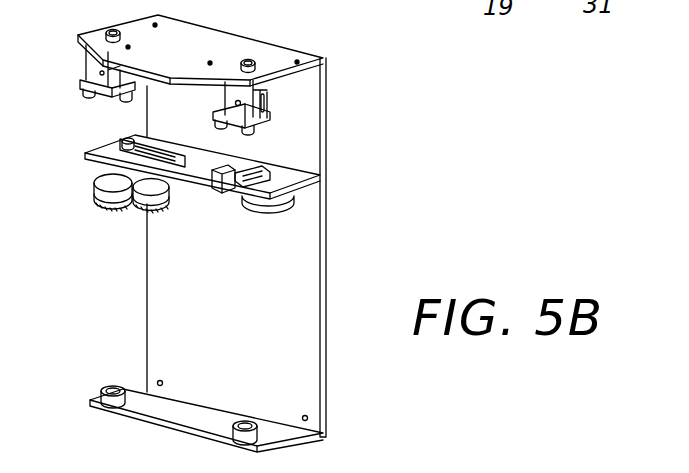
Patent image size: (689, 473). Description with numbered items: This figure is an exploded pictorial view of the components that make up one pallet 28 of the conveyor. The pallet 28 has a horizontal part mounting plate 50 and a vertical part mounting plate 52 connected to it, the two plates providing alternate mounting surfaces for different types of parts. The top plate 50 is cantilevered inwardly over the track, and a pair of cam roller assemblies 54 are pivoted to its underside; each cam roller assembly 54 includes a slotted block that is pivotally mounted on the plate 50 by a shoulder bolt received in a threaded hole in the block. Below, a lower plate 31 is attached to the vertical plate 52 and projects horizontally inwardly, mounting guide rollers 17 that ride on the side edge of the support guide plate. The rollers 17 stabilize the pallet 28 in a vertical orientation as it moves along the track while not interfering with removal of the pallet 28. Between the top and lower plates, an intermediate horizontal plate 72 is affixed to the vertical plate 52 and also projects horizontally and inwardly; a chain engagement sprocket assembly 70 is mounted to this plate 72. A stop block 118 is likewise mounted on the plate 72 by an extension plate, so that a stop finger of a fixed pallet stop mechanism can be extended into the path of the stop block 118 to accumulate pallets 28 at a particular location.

The guide rollers 17 is at (113, 389).
The pallet 28 is at (340, 225).
The lower plate 31 is at (205, 408).
The horizontal part mounting plate 50 is at (283, 64).
The vertical part mounting plate 52 is at (313, 287).
The cam roller assemblies 54 is at (80, 66).
The chain engagement sprocket assembly 70 is at (99, 208).
The intermediate horizontal plate 72 is at (322, 174).
The stop block 118 is at (220, 190).